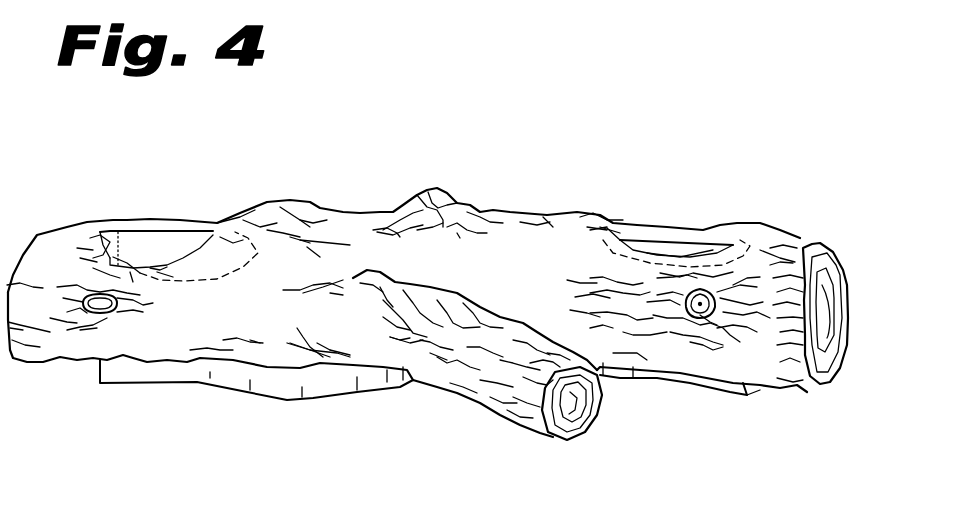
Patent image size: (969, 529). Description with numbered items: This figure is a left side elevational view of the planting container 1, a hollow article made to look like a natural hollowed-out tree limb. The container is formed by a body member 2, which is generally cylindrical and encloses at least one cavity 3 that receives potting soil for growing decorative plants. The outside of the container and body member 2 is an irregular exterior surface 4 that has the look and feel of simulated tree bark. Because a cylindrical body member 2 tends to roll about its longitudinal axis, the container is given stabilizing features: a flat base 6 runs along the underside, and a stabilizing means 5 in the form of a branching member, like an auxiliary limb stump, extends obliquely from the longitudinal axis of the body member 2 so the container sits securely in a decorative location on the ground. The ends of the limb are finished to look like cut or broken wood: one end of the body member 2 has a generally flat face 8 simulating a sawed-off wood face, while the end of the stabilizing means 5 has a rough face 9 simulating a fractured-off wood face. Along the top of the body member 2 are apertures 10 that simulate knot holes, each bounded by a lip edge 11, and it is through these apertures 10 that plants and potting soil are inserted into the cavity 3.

The planting container 1 is at (610, 53).
The body member 2 is at (353, 213).
The cavity 3 is at (170, 247).
The irregular exterior surface 4 is at (643, 347).
The stabilizing means 5 is at (477, 388).
The flat base 6 is at (743, 393).
The flat face 8 is at (837, 390).
The rough face 9 is at (573, 430).
The aperture 10 is at (133, 240).
The lip edge 11 is at (72, 148).